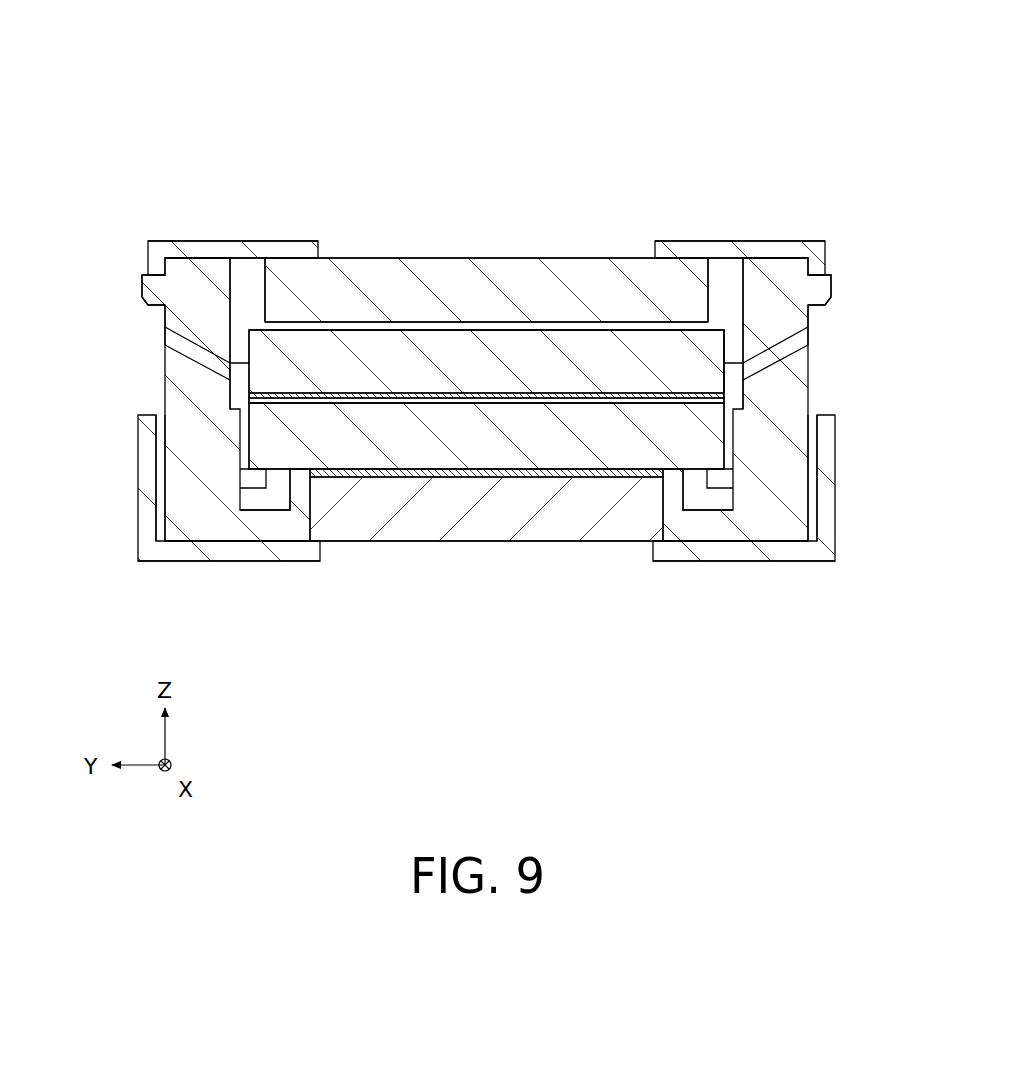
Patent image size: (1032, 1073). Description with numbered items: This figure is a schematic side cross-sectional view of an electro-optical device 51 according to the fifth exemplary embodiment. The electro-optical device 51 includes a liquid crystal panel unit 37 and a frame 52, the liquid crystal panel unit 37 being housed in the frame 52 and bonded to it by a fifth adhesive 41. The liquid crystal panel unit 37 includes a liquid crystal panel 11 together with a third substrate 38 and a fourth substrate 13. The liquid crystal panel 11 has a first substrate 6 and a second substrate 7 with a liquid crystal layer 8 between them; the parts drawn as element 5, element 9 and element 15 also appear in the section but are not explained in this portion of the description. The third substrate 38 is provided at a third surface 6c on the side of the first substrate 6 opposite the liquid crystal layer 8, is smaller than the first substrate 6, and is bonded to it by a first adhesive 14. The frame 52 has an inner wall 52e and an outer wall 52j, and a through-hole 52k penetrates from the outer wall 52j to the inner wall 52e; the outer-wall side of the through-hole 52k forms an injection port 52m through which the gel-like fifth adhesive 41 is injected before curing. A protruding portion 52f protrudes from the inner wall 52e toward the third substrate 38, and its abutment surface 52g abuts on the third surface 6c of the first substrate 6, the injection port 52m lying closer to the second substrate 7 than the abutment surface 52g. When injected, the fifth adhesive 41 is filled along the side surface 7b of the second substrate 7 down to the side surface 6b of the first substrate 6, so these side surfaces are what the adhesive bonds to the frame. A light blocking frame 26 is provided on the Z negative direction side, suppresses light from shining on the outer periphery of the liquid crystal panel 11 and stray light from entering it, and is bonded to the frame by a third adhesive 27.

The lid 5 is at (303, 248).
The first substrate 6 is at (255, 440).
The side surface of the first substrate 6b is at (726, 440).
The third surface 6c is at (588, 478).
The second substrate 7 is at (265, 382).
The side surface of the second substrate 7b is at (726, 386).
The liquid crystal layer 8 is at (262, 398).
The electrode layer 9 is at (256, 405).
The liquid crystal panel 11 is at (62, 360).
The fourth substrate 13 is at (475, 268).
The first adhesive 14 is at (520, 477).
The upper bonding layer 15 is at (538, 326).
The light blocking frame 26 is at (203, 550).
The third adhesive 27 is at (160, 522).
The liquid crystal panel unit 37 is at (568, 132).
The third substrate 38 is at (457, 527).
The fifth adhesive 41 is at (240, 340).
The electro-optical device 51 is at (806, 80).
The frame 52 is at (205, 272).
The inner wall 52e is at (245, 268).
The protruding portion 52f is at (278, 493).
The abutment surface 52g is at (255, 472).
The outer wall 52j is at (166, 352).
The through-hole 52k is at (148, 284).
The injection port 52m is at (165, 320).